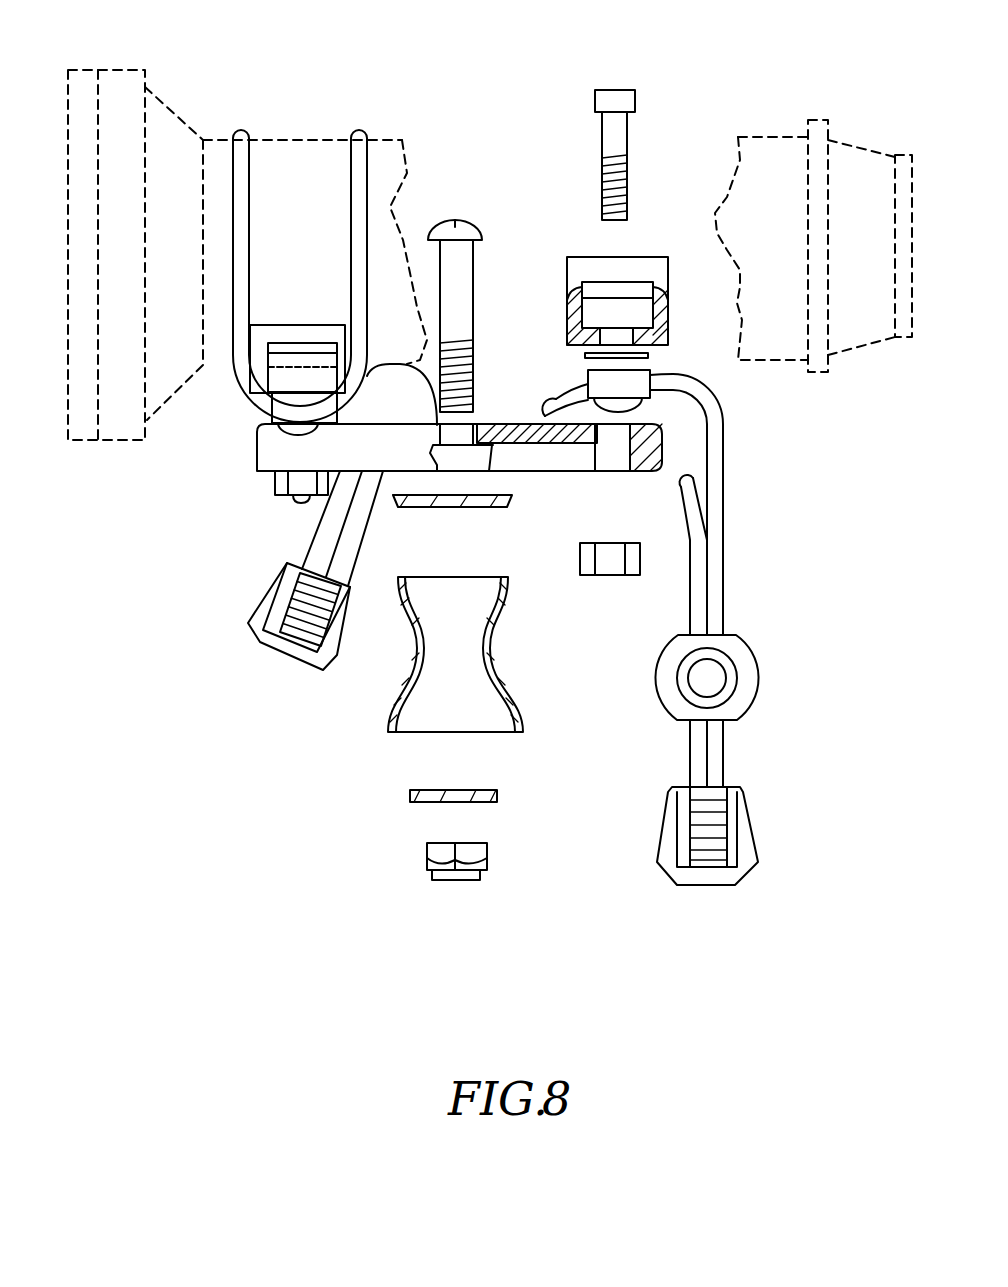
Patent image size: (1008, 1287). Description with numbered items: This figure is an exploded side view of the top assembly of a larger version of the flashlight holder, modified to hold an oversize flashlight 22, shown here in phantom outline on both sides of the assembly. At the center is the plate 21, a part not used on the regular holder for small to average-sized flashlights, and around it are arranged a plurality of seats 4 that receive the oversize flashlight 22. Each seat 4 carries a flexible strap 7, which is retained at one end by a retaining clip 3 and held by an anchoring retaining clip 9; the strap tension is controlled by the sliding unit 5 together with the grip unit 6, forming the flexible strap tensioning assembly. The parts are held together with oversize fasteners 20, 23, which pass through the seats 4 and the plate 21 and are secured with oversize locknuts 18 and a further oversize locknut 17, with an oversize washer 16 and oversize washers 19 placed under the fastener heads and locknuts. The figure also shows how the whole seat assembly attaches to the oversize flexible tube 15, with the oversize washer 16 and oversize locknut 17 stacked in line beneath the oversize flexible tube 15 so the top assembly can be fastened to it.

The retaining clip 3 is at (647, 355).
The seat 4 is at (262, 367).
The sliding unit 5 is at (386, 362).
The grip unit 6 is at (248, 637).
The flexible strap 7 is at (245, 135).
The anchoring retaining clip 9 is at (298, 408).
The oversize flexible tube 15 is at (387, 693).
The oversize washer 16 is at (408, 800).
The oversize locknut 17 is at (445, 857).
The oversize locknut 18 is at (300, 485).
The oversize washer 19 is at (507, 505).
The oversize fastener 20 is at (613, 97).
The plate 21 is at (490, 430).
The oversize flashlight 22 is at (158, 128).
The oversize fastener 23 is at (470, 223).